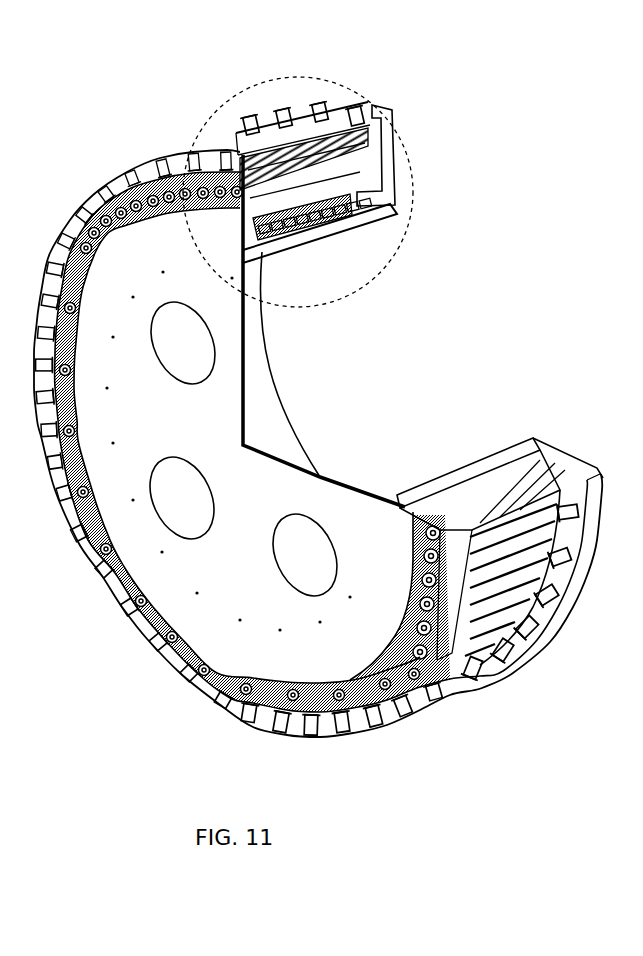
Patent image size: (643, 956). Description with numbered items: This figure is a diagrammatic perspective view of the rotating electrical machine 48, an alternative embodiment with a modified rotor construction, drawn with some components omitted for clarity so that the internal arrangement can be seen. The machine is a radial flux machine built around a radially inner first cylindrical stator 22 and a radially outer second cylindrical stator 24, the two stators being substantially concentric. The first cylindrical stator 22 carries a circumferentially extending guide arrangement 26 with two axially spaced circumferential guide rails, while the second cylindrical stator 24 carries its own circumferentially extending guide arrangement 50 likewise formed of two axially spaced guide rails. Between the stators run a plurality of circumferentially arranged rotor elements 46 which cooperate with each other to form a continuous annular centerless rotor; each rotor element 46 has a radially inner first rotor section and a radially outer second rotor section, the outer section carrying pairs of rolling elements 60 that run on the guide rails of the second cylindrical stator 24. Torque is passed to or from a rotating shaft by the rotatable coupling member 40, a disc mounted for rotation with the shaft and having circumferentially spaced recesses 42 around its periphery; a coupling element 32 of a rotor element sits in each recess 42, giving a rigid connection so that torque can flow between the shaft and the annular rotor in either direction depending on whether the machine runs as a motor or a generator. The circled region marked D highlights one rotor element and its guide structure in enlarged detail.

The first cylindrical stator 22 is at (322, 243).
The second cylindrical stator 24 is at (312, 168).
The guide arrangement 26 is at (357, 233).
The coupling element 32 is at (83, 200).
The rotatable coupling member 40 is at (323, 473).
The recesses 42 is at (292, 737).
The rotor element 46 is at (345, 125).
The rotating electrical machine 48 is at (487, 308).
The guide arrangement 50 is at (278, 172).
The rolling elements 60 is at (173, 147).
The detail D is at (410, 162).